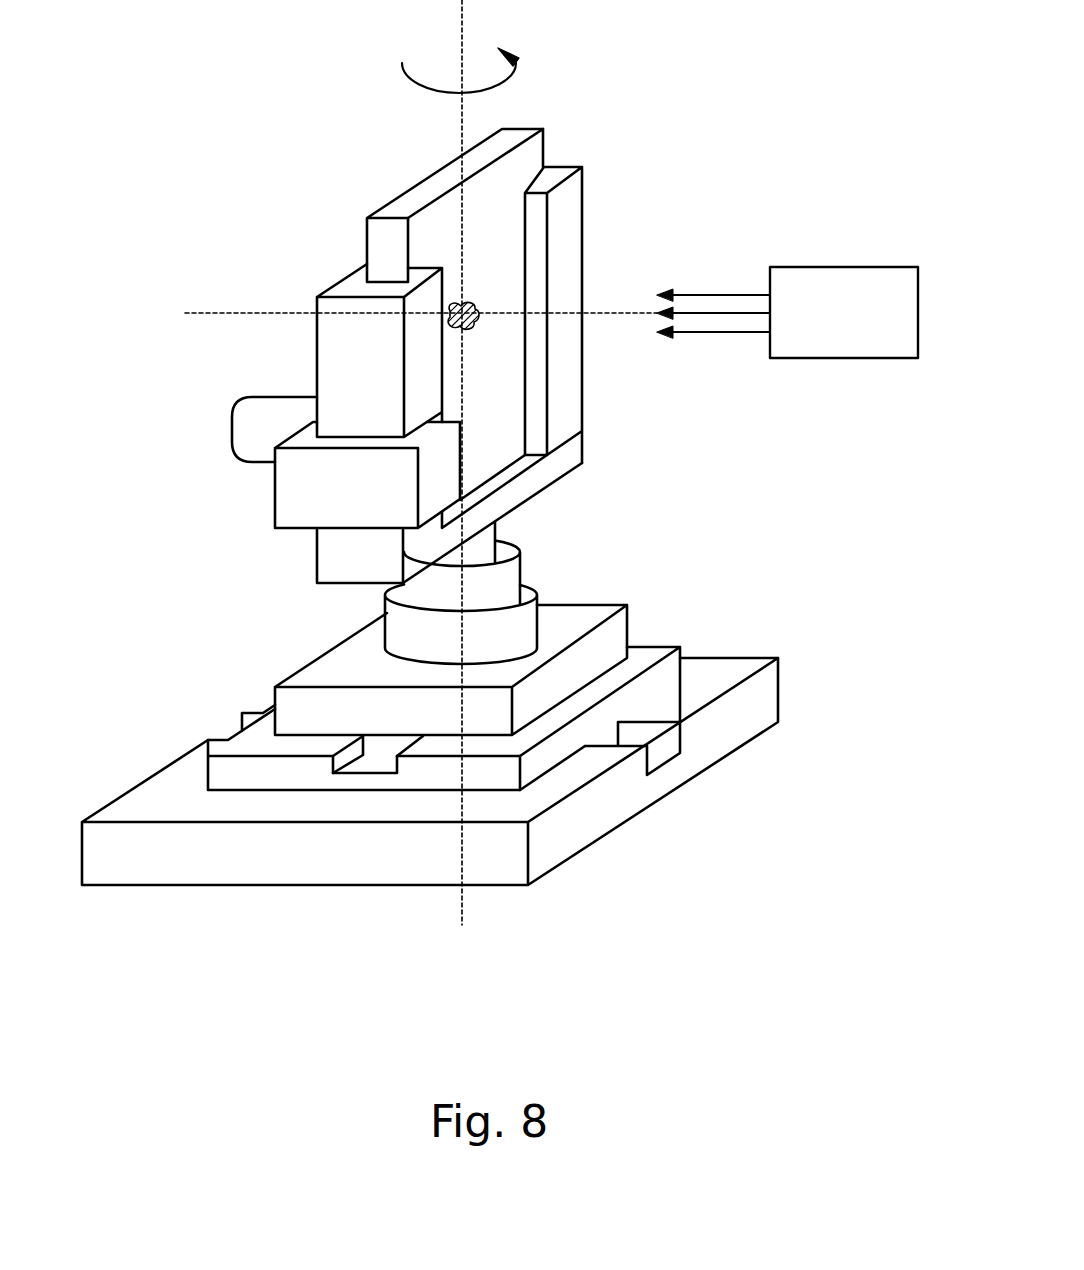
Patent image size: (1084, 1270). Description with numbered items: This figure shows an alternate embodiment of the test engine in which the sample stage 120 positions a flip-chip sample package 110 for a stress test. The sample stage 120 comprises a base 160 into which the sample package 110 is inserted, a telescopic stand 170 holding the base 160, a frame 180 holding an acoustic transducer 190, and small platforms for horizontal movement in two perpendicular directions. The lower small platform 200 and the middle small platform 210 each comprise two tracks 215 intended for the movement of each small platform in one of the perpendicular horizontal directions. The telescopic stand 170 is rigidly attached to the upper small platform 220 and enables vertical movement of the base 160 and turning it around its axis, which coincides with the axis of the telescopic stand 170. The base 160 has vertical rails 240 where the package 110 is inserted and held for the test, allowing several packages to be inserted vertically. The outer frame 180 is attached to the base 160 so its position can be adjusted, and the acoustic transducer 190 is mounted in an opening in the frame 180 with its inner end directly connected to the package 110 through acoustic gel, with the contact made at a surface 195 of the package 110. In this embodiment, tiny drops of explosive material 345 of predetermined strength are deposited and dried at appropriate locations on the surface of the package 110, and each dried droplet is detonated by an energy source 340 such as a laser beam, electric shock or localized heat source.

The sample package 110 is at (398, 207).
The sample stage 120 is at (640, 176).
The base 160 is at (340, 350).
The telescopic stand 170 is at (502, 588).
The frame 180 is at (305, 488).
The acoustic transducer 190 is at (263, 416).
The plate surface 195 is at (500, 435).
The lower small platform 200 is at (752, 715).
The middle small platform 210 is at (663, 678).
The tracks 215 is at (371, 765).
The upper small platform 220 is at (607, 641).
The vertical rails 240 is at (557, 175).
The energy source 340 is at (862, 360).
The explosives 345 is at (472, 307).